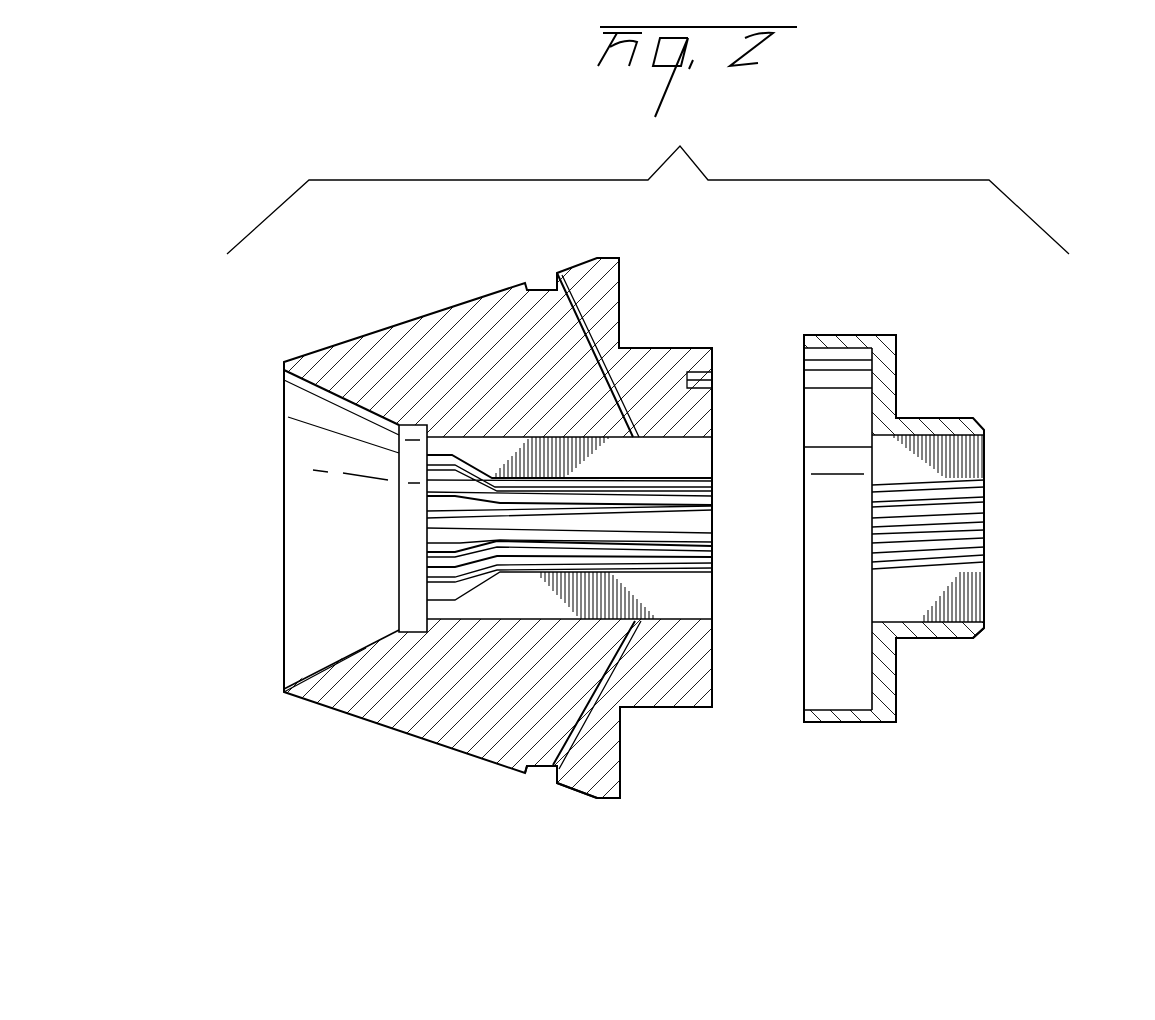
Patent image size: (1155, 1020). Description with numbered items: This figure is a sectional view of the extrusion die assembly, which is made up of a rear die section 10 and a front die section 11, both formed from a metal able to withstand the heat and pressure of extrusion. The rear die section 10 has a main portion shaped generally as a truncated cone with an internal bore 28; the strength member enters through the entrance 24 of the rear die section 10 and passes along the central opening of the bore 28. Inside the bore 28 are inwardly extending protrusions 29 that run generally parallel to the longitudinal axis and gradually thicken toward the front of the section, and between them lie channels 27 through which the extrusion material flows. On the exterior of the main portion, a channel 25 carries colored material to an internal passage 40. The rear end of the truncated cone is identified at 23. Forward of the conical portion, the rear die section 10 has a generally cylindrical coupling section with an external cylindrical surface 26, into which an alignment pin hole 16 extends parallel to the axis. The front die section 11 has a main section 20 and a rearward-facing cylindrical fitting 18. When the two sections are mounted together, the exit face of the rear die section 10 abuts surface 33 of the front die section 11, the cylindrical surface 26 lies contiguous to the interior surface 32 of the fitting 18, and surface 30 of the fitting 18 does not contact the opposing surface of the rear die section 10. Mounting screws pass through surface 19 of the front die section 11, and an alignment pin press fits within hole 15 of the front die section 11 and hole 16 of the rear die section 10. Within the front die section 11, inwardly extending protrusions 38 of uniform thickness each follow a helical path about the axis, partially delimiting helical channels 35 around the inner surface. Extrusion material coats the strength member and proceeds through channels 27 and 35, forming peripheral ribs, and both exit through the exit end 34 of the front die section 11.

The rear die section 10 is at (427, 740).
The front die section 11 is at (887, 722).
The hole 15 is at (897, 373).
The alignment pin hole 16 is at (713, 377).
The cylindrical fitting 18 is at (858, 722).
The surface 19 is at (900, 710).
The main section 20 is at (963, 640).
The rear end 23 is at (302, 680).
The entrance 24 is at (284, 390).
The channel 25 is at (536, 767).
The external cylindrical surface 26 is at (655, 708).
The channels 27 is at (713, 563).
The internal bore 28 is at (399, 497).
The inwardly extending protrusions 29 is at (607, 500).
The surface 30 is at (804, 338).
The interior surface 32 is at (830, 710).
The surface 33 is at (870, 409).
The exit end 34 is at (985, 437).
The channels 35 is at (985, 527).
The inwardly extending protrusions 38 is at (985, 550).
The internal passage 40 is at (573, 743).